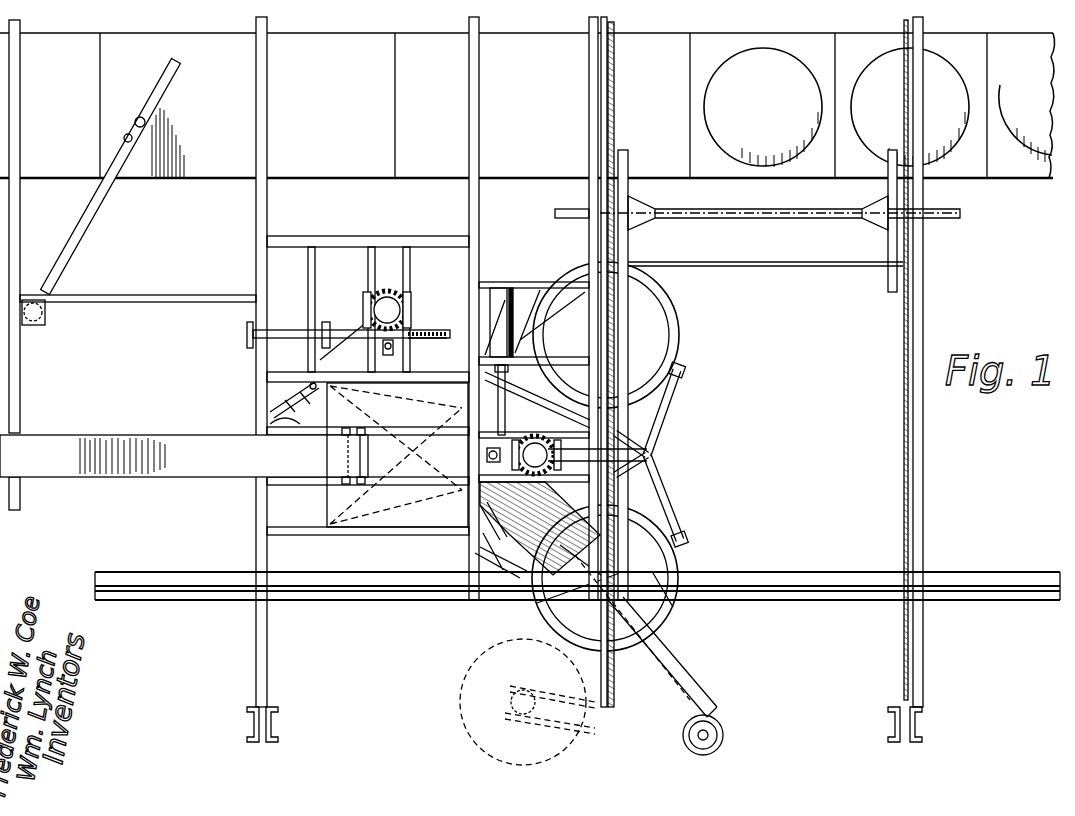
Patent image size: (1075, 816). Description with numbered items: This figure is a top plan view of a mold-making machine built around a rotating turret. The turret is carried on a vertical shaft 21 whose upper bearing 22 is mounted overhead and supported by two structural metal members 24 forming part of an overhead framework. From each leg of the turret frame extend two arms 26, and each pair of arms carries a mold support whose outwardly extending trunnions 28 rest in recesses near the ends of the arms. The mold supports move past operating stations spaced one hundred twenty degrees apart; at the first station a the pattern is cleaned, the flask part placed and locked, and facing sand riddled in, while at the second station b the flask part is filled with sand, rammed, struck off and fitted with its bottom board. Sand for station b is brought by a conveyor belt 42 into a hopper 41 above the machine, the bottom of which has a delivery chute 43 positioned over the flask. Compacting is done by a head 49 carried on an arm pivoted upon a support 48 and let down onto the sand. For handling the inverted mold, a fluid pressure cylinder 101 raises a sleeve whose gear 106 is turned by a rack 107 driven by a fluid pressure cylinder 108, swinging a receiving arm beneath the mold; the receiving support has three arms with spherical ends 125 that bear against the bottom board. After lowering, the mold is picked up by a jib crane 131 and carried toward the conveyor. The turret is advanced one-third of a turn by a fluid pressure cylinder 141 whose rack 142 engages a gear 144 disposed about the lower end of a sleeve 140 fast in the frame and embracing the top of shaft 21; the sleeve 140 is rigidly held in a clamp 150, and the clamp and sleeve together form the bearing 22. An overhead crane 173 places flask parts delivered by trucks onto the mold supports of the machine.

The jib crane 131 is at (136, 118).
The fluid pressure cylinder 108 is at (287, 330).
The fluid pressure cylinder 101 is at (400, 306).
The gear 106 is at (410, 316).
The rack 107 is at (425, 338).
The fluid pressure cylinder 141 is at (525, 292).
The structural metal members 24 is at (560, 424).
The spherical ends 125 is at (252, 400).
The conveyor belt 42 is at (198, 448).
The clamp 150 is at (482, 466).
The hopper 41 is at (390, 505).
The rack 142 is at (495, 525).
The vertical shaft 21 is at (540, 528).
The first operating station a is at (679, 330).
The second operating station b is at (680, 556).
The trunnions 28 is at (683, 372).
The arms 26 is at (672, 400).
The gear 144 is at (652, 446).
The bearing 22 is at (648, 458).
The sleeve 140 is at (655, 466).
The head 49 is at (660, 610).
The support 48 is at (720, 732).
The delivery chute 43 is at (522, 574).
The overhead crane 173 is at (773, 214).